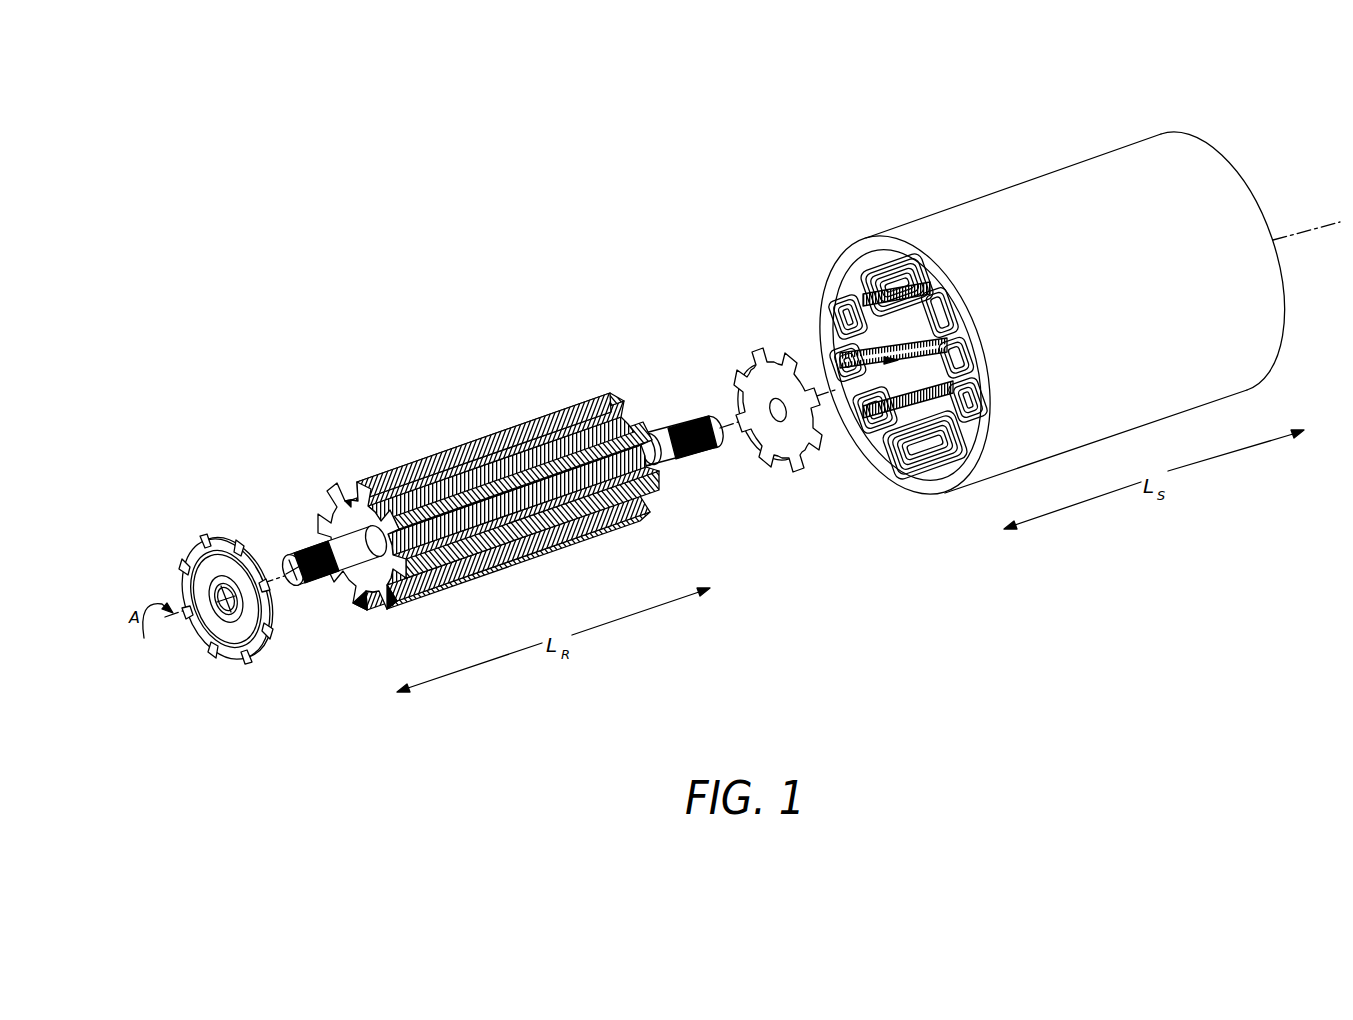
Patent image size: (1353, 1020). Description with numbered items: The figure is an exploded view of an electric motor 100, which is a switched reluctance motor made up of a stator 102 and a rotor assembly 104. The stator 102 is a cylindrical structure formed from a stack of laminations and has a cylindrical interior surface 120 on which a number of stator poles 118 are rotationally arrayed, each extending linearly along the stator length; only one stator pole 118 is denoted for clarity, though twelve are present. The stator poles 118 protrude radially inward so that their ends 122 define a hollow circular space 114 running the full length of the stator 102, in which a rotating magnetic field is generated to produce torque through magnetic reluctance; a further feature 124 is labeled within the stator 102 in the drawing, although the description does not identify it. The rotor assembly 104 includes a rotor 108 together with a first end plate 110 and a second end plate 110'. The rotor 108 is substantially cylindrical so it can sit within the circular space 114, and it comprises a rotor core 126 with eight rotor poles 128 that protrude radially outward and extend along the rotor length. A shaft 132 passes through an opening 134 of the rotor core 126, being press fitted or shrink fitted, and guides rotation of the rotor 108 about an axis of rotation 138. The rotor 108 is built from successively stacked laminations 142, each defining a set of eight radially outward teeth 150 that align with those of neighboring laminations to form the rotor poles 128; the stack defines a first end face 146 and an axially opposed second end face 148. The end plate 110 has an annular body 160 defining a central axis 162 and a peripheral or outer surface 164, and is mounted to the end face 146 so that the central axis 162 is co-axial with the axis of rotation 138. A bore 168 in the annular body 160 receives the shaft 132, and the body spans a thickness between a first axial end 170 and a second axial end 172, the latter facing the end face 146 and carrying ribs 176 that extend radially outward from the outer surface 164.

The electric motor 100 is at (293, 188).
The stator 102 is at (1102, 153).
The rotor assembly 104 is at (363, 377).
The rotor 108 is at (473, 585).
The first end plate 110 is at (230, 602).
The second end plate 110' is at (785, 425).
The circular space 114 is at (838, 363).
The stator pole 118 is at (877, 445).
The interior surface 120 is at (845, 297).
The ends of the stator poles 122 is at (917, 427).
The stator slot 124 is at (868, 272).
The rotor core 126 is at (371, 608).
The rotor pole 128 is at (387, 468).
The shaft 132 is at (651, 432).
The opening 134 is at (337, 547).
The axis of rotation 138 is at (298, 590).
The lamination 142 is at (351, 508).
The first end face 146 is at (345, 492).
The second end face 148 is at (660, 478).
The set of teeth 150 is at (392, 613).
The annular body 160 is at (228, 538).
The central axis 162 is at (157, 626).
The peripheral surface 164 is at (248, 572).
The bore 168 is at (212, 597).
The first axial end 170 is at (198, 557).
The second axial end 172 is at (273, 620).
The ribs 176 is at (246, 666).